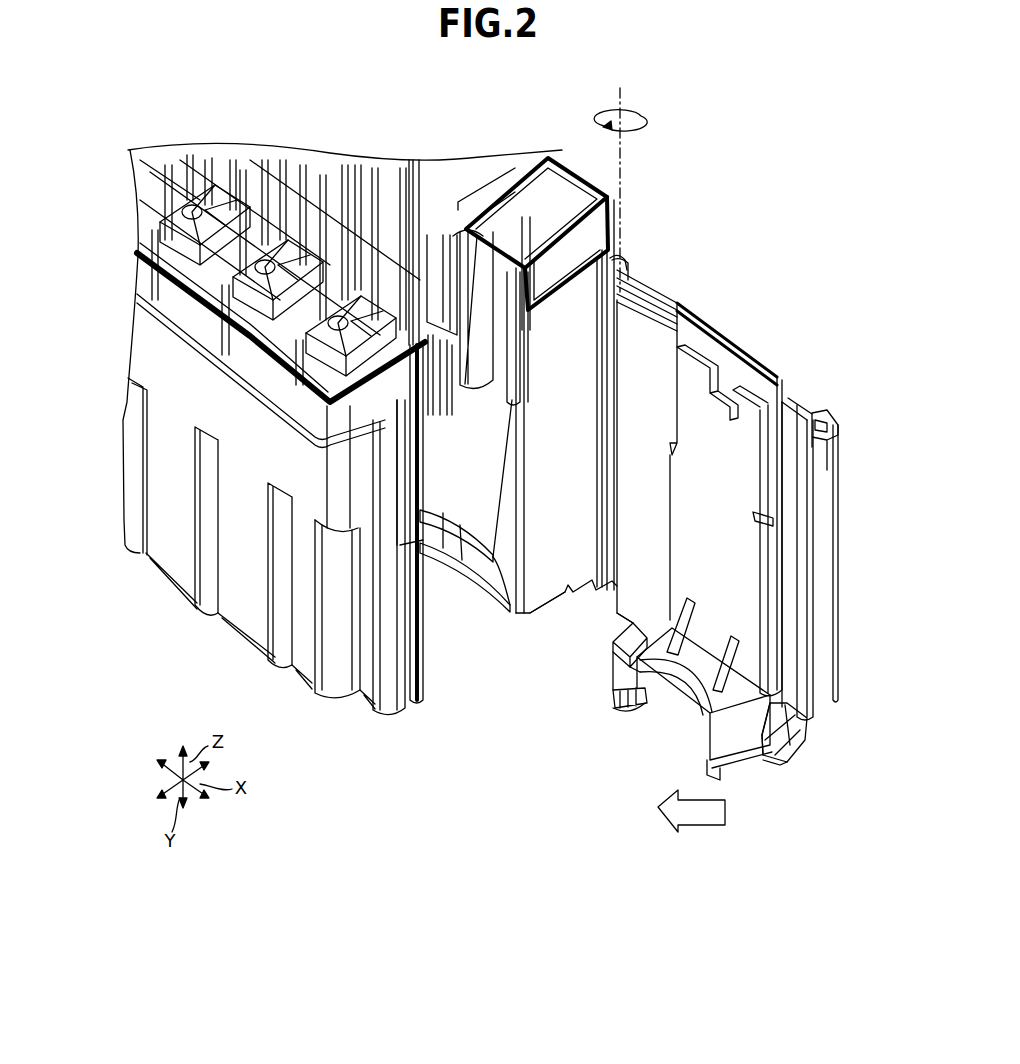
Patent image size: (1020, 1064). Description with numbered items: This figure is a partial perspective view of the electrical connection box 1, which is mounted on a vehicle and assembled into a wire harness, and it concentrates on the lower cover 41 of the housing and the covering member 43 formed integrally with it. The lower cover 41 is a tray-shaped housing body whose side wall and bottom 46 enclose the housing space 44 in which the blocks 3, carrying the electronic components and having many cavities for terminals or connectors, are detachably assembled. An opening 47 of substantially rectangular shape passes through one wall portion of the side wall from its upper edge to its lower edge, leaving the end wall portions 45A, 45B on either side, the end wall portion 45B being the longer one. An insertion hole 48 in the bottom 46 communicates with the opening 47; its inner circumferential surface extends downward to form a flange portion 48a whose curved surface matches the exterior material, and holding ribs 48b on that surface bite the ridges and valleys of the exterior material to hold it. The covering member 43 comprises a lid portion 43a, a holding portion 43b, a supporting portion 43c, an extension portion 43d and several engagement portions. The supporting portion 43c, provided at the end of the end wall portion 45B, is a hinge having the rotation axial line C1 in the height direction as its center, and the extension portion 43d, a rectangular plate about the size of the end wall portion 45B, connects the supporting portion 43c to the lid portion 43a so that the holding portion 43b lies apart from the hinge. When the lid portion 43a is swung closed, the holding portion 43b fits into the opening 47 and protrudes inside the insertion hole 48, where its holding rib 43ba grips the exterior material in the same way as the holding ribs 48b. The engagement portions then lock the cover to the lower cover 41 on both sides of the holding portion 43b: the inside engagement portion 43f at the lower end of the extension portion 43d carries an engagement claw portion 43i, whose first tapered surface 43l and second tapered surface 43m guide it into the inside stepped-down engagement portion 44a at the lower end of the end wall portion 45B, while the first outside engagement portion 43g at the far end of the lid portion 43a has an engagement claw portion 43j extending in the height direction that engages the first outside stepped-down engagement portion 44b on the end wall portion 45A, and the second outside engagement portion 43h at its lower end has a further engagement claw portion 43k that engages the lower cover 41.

The electrical connection box 1 is at (658, 128).
The block 3 is at (455, 479).
The lower cover 41 is at (611, 197).
The covering member 43 is at (736, 326).
The lid portion 43a is at (663, 695).
The holding portion 43b is at (645, 693).
The holding rib 43ba is at (720, 571).
The supporting portion 43c is at (623, 268).
The extension portion 43d is at (653, 578).
The inside engagement portion 43f is at (618, 660).
The first outside engagement portion 43g is at (804, 650).
The second outside engagement portion 43h is at (763, 700).
The engagement claw portion 43i is at (622, 654).
The engagement claw portion 43j is at (822, 410).
The engagement claw portion 43k is at (778, 722).
The first tapered surface 43l is at (628, 642).
The second tapered surface 43m is at (645, 675).
The housing space 44 is at (541, 158).
The inside stepped-down engagement portion 44a is at (565, 598).
The first outside stepped-down engagement portion 44b is at (400, 547).
The end wall portion 45A is at (358, 490).
The end wall portion 45B is at (578, 358).
The bottom 46 is at (452, 227).
The opening 47 is at (515, 555).
The insertion hole 48 is at (470, 560).
The flange portion 48a is at (530, 560).
The holding ribs 48b is at (470, 560).
The rotation axial line C1 is at (622, 208).